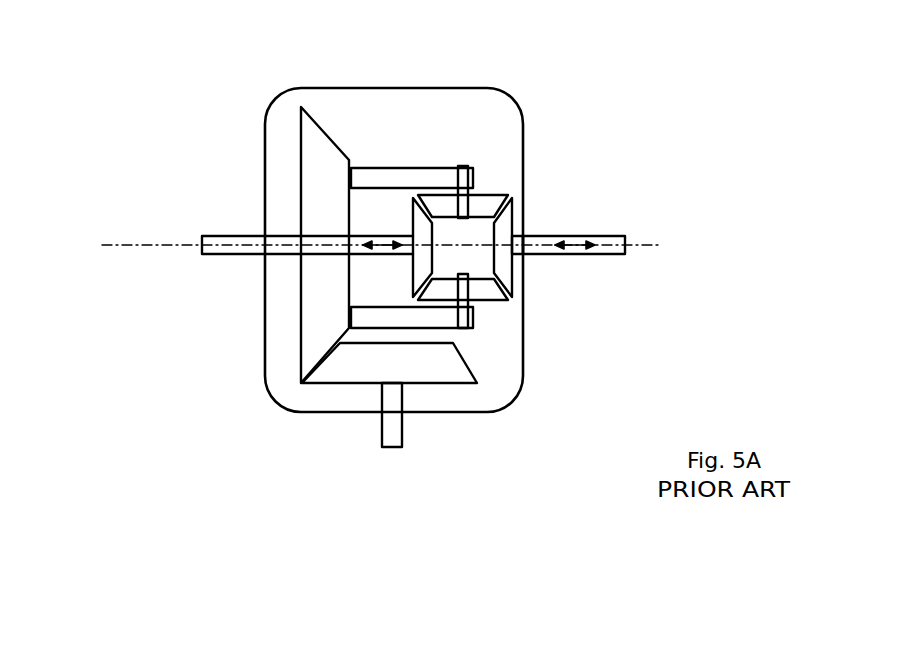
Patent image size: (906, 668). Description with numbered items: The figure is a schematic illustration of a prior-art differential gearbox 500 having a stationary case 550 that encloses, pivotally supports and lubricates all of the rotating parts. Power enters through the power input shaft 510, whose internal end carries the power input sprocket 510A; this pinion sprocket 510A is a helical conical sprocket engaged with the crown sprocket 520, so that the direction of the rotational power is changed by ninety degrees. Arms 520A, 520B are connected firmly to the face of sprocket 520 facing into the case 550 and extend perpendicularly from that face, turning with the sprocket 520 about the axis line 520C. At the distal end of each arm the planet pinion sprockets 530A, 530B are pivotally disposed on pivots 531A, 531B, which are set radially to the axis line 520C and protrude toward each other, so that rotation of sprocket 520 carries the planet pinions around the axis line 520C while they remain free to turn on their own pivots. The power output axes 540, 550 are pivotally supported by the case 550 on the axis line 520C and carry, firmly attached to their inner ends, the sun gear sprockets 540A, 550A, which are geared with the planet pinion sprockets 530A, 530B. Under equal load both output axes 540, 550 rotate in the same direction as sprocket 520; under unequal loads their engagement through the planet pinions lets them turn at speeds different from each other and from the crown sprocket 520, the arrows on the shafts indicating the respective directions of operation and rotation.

The differential gearbox 500 is at (153, 427).
The power input shaft 510 is at (375, 438).
The power input sprocket 510A is at (450, 383).
The crown sprocket 520 is at (312, 178).
The arm 520A is at (395, 168).
The arm 520B is at (437, 328).
The axis line 520C is at (132, 245).
The planet pinion sprocket 530A is at (483, 195).
The planet pinion sprocket 530B is at (488, 302).
The pivot 531A is at (468, 180).
The pivot 531B is at (473, 308).
The power output axis 540 is at (597, 257).
The sun gear sprocket 540A is at (514, 225).
The case 550 is at (487, 87).
The sun gear sprocket 550A is at (412, 222).